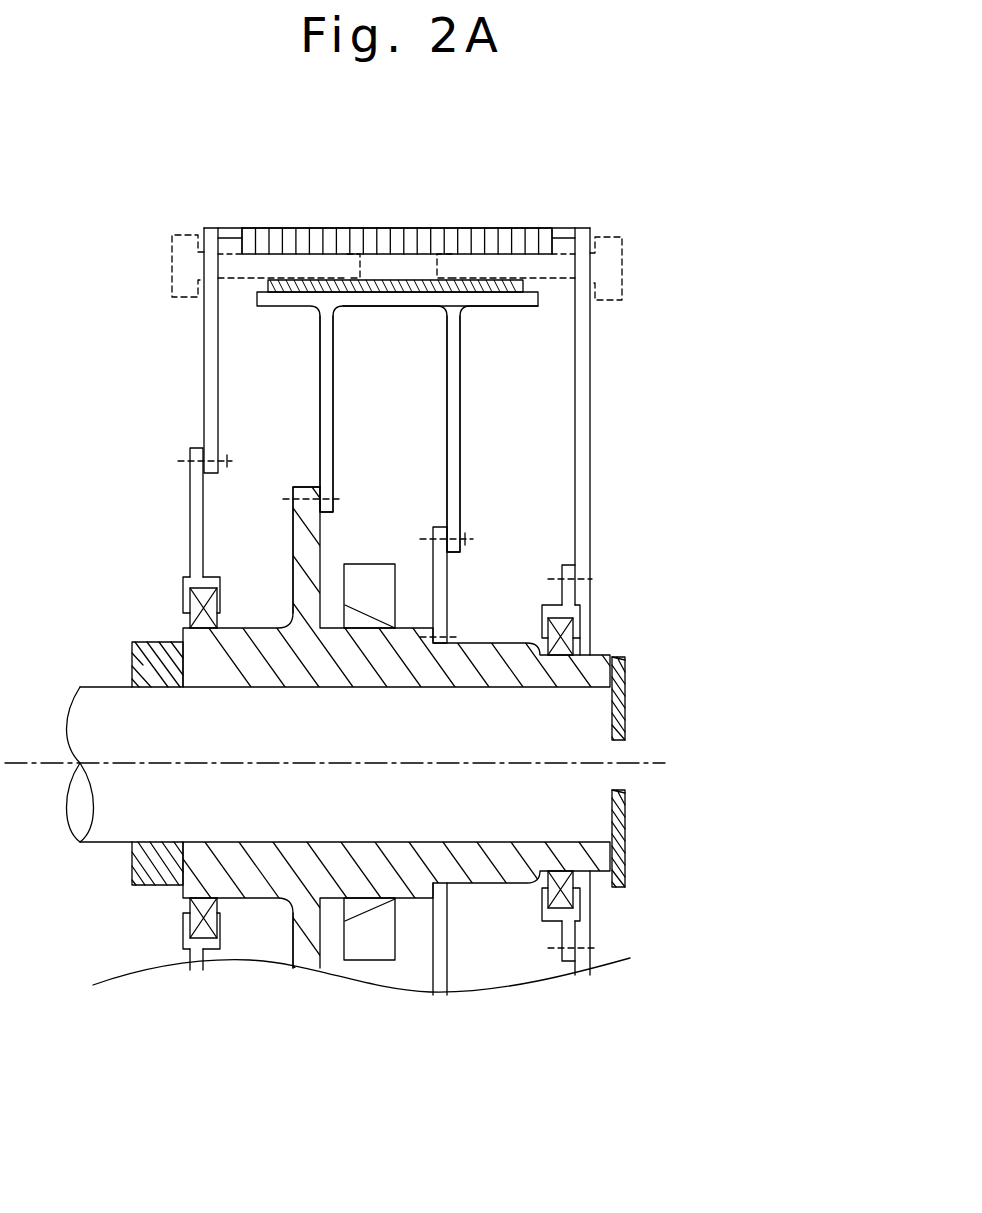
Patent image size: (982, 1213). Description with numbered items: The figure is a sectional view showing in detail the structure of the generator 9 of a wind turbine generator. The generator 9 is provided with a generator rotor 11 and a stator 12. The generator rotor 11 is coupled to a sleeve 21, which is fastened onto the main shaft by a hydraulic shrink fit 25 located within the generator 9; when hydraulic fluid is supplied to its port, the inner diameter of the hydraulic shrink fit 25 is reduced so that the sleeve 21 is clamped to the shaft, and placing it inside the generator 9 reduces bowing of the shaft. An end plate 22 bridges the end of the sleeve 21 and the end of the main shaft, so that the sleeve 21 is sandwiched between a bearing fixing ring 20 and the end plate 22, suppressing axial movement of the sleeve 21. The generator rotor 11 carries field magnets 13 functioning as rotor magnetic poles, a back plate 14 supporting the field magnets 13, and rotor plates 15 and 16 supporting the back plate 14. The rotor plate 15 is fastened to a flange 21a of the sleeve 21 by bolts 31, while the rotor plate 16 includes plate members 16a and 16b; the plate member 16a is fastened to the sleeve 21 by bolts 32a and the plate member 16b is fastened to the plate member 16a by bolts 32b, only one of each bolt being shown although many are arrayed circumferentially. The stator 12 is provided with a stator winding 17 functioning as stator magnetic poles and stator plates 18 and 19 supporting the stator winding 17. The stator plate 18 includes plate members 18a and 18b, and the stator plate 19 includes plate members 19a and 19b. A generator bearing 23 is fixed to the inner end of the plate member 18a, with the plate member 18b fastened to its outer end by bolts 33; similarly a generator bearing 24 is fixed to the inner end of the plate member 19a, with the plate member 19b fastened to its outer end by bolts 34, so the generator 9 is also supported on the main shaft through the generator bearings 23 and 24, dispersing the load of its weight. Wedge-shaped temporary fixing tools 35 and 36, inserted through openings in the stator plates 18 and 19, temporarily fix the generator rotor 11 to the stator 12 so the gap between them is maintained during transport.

The generator 9 is at (630, 210).
The generator rotor 11 is at (538, 300).
The stator 12 is at (523, 228).
The field magnets 13 is at (380, 282).
The back plate 14 is at (395, 306).
The rotor plate 15 is at (321, 368).
The rotor plate 16 is at (378, 447).
The plate member 16a is at (440, 527).
The plate member 16b is at (447, 471).
The stator winding 17 is at (423, 230).
The stator plate 18 is at (114, 440).
The plate member 18a is at (196, 499).
The plate member 18b is at (207, 430).
The stator plate 19 is at (655, 527).
The plate member 19a is at (570, 600).
The plate member 19b is at (584, 557).
The bearing fixing ring 20 is at (132, 662).
The sleeve 21 is at (565, 676).
The flange 21a is at (306, 580).
The end plate 22 is at (625, 682).
The generator bearing 23 is at (206, 589).
The generator bearing 24 is at (573, 645).
The hydraulic shrink fit 25 is at (372, 580).
The bolts 31 is at (287, 497).
The bolts 32a is at (452, 640).
The bolts 32b is at (465, 535).
The bolts 33 is at (227, 457).
The bolts 34 is at (562, 578).
The temporary fixing tool 35 is at (165, 266).
The temporary fixing tool 36 is at (625, 270).